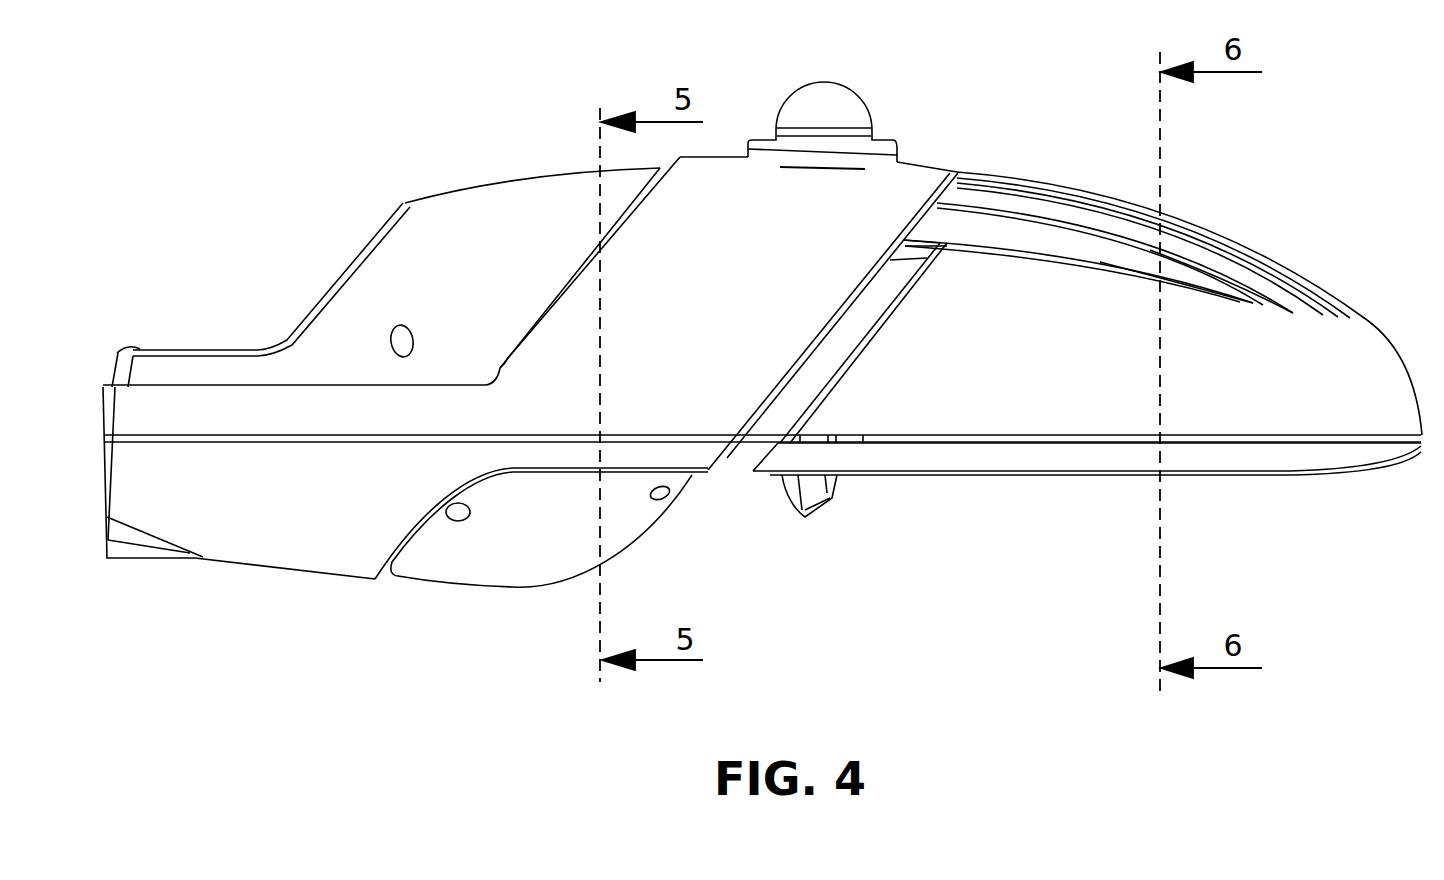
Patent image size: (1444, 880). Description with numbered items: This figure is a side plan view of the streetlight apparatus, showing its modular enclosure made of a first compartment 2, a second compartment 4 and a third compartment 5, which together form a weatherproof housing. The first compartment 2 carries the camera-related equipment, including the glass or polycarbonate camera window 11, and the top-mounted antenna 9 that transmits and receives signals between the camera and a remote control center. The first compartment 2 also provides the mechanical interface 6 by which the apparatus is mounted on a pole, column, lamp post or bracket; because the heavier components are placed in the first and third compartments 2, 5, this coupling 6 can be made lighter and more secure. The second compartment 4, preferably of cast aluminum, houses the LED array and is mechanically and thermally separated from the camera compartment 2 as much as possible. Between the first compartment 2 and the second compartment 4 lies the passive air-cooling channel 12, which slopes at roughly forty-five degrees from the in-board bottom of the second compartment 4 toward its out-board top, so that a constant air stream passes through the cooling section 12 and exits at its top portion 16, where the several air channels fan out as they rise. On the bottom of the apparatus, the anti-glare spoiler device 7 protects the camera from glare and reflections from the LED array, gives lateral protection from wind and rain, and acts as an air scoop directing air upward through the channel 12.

The first compartment 2 is at (913, 187).
The second compartment 4 is at (1368, 362).
The third compartment 5 is at (357, 320).
The mechanical interface 6 is at (105, 492).
The anti-glare spoiler device 7 is at (833, 500).
The antenna 9 is at (827, 108).
The camera window 11 is at (498, 560).
The passive air-cooling channel 12 is at (782, 413).
The top portion of the cooling section 16 is at (1238, 237).